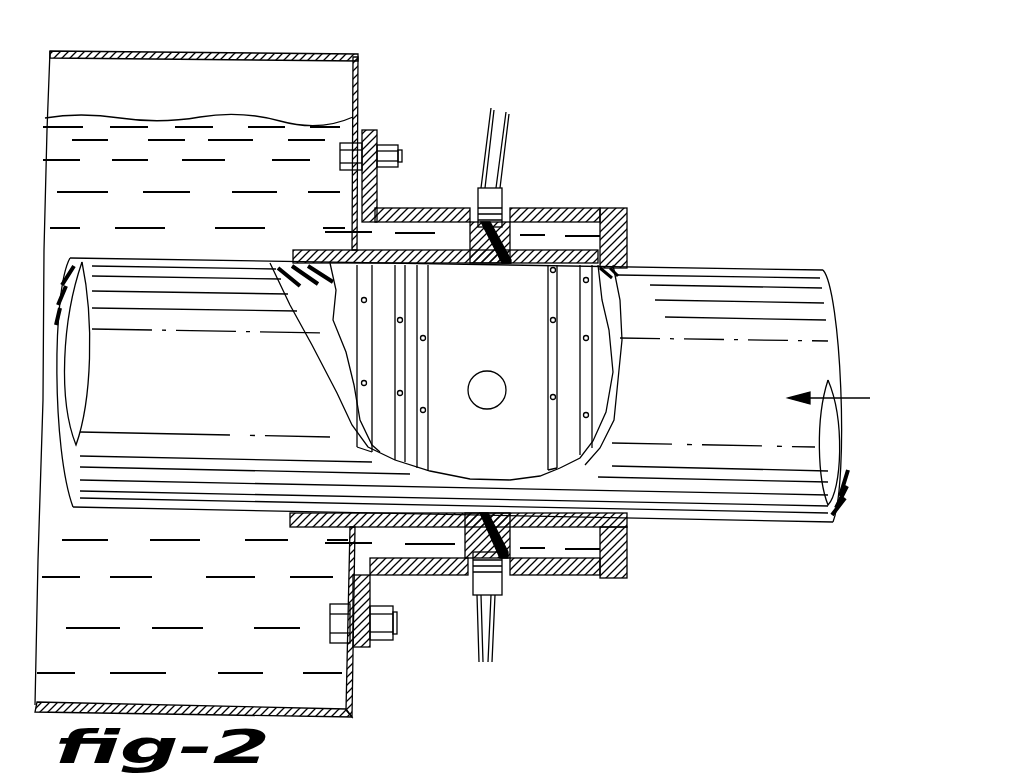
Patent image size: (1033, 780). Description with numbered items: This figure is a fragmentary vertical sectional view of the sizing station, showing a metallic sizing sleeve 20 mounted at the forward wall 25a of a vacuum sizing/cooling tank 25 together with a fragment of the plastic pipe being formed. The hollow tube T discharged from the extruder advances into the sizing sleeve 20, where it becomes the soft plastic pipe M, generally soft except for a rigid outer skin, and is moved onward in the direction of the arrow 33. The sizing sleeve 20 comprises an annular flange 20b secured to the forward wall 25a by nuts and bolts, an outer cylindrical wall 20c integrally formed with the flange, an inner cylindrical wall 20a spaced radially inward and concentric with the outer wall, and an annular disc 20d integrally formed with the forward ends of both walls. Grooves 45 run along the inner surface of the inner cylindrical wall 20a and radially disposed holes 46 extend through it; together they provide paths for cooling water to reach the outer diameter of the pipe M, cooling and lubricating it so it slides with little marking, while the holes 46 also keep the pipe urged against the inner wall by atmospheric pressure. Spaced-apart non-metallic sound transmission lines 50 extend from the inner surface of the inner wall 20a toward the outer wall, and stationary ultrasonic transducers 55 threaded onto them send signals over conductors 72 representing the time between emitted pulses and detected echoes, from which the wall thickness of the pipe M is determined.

The sizing sleeve 20 is at (505, 358).
The inner cylindrical wall 20a is at (613, 515).
The annular flange 20b is at (372, 132).
The outer cylindrical wall 20c is at (570, 212).
The annular disc 20d is at (630, 236).
The vacuum sizing/cooling tank 25 is at (218, 358).
The forward wall 25a is at (362, 62).
The arrow 33 is at (855, 398).
The grooves 45 is at (360, 369).
The holes 46 is at (584, 338).
The sound transmission lines 50 is at (487, 371).
The transducers 55 is at (500, 195).
The conductors 72 is at (492, 110).
The hollow tube T is at (794, 270).
The soft plastic pipe M is at (185, 388).